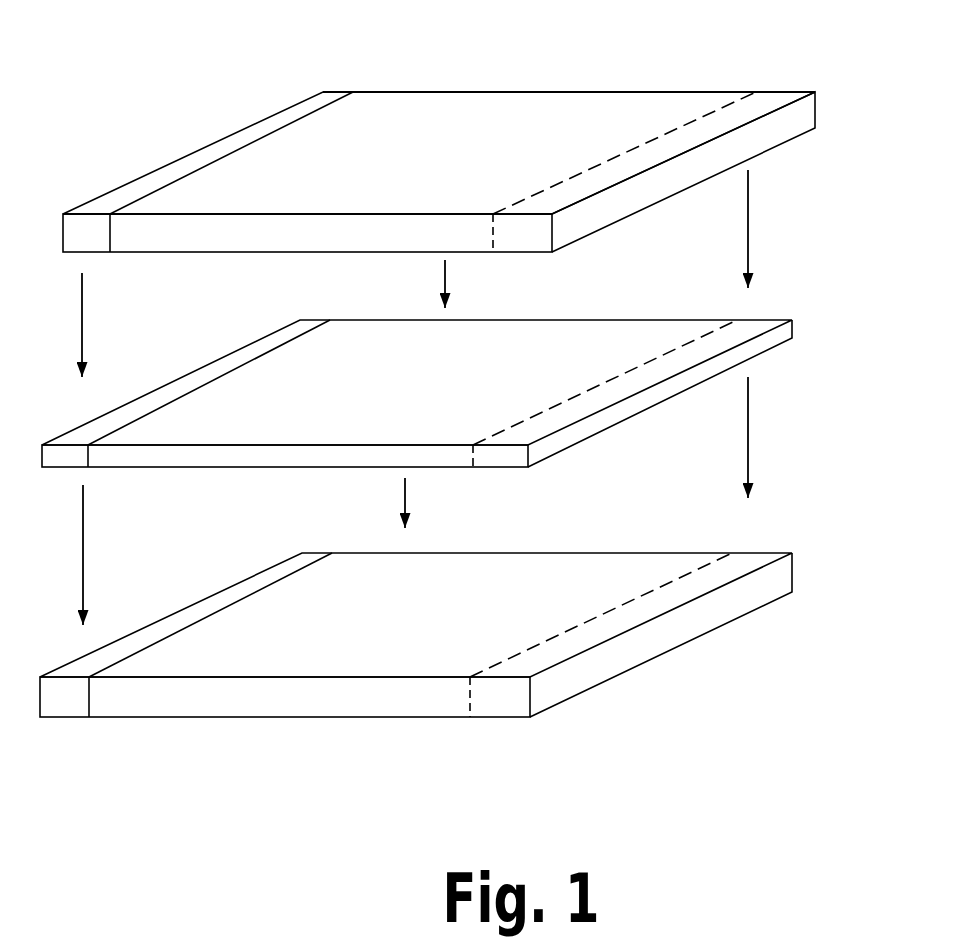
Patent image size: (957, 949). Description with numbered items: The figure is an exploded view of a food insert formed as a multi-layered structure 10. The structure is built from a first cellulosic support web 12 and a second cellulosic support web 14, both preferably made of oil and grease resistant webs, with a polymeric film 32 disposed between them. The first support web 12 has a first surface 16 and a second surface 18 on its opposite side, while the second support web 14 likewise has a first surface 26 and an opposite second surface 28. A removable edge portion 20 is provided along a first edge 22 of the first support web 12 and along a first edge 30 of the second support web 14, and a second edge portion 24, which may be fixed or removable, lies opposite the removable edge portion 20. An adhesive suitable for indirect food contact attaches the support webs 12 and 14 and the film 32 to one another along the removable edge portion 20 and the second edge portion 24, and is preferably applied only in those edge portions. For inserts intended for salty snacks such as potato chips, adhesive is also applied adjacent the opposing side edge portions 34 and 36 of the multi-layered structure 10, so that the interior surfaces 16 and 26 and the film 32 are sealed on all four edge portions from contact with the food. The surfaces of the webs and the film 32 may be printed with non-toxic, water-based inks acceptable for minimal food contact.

The multi-layered structure 10 is at (453, 399).
The first cellulosic support web 12 is at (449, 672).
The second cellulosic support web 14 is at (465, 362).
The first surface 16 is at (390, 627).
The second surface 18 is at (489, 722).
The removable edge portion 20 is at (737, 116).
The first edge 22 is at (732, 597).
The second edge portion 24 is at (219, 148).
The first surface 26 is at (535, 257).
The second surface 28 is at (388, 160).
The first edge 30 is at (745, 150).
The polymeric film 32 is at (672, 392).
The side edge portion 34 is at (289, 202).
The side edge portion 36 is at (457, 95).